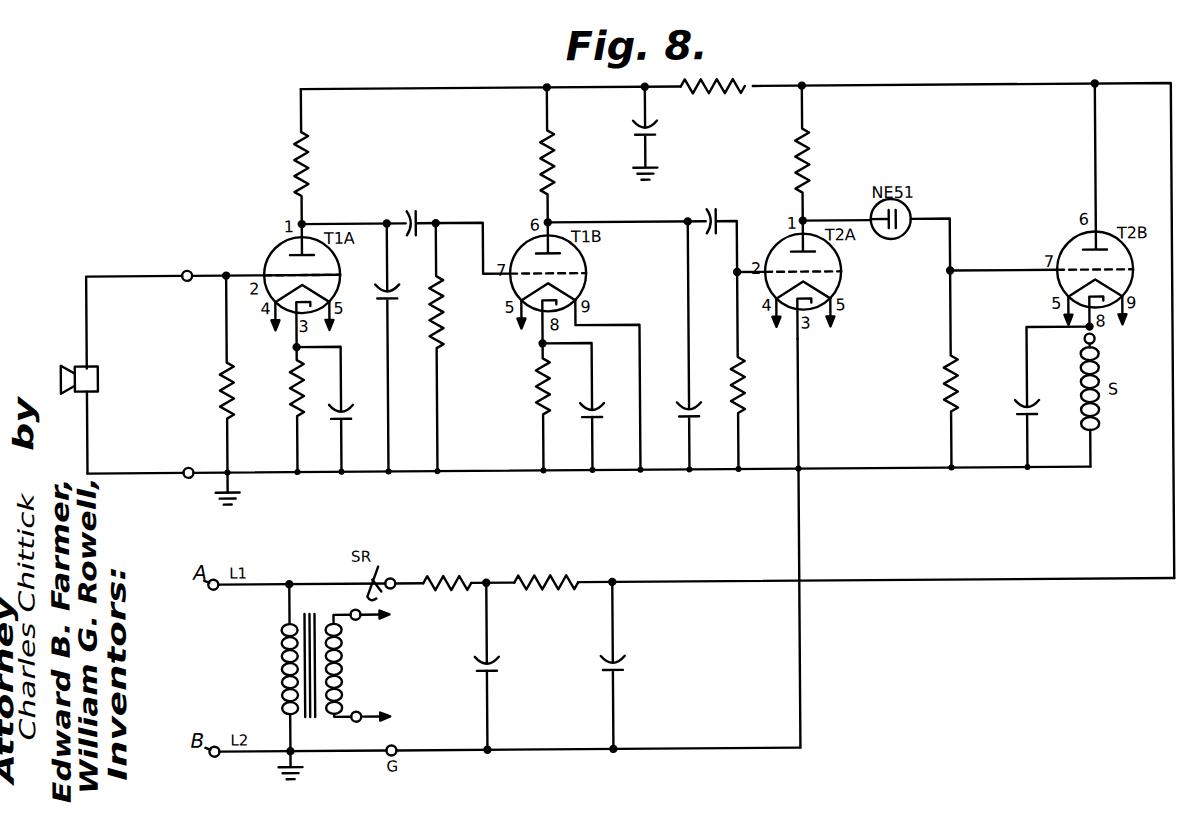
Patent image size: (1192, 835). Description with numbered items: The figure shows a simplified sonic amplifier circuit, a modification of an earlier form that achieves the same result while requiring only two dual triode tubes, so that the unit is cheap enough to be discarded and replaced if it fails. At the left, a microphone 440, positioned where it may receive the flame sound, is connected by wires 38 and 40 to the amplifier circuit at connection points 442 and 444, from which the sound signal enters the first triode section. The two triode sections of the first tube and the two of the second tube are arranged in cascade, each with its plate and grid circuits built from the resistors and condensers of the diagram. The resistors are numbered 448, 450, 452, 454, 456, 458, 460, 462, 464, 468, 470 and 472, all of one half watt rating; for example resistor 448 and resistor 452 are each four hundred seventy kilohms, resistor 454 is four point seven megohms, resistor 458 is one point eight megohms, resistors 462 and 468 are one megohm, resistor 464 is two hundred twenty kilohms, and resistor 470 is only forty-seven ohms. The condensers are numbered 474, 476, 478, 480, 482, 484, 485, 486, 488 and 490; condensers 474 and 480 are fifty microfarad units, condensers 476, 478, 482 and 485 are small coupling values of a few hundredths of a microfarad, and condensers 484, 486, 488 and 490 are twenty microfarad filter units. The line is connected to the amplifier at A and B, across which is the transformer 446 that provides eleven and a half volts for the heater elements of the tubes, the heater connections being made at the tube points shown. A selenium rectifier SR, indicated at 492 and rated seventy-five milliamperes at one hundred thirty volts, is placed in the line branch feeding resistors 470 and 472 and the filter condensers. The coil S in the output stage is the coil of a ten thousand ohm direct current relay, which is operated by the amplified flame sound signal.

The wire 38 is at (87, 312).
The wire 40 is at (155, 470).
The microphone 440 is at (92, 365).
The connection point 442 is at (194, 258).
The connection point 444 is at (187, 476).
The transformer 446 is at (312, 716).
The resistor 448 is at (313, 152).
The resistor 450 is at (712, 84).
The resistor 452 is at (557, 142).
The resistor 454 is at (218, 375).
The resistor 456 is at (290, 368).
The resistor 458 is at (430, 330).
The resistor 460 is at (536, 384).
The resistor 462 is at (746, 380).
The resistor 464 is at (815, 142).
The resistor 468 is at (943, 372).
The resistor 470 is at (452, 565).
The resistor 472 is at (552, 565).
The condenser 474 is at (335, 412).
The condenser 476 is at (383, 294).
The condenser 478 is at (413, 210).
The condenser 480 is at (618, 392).
The condenser 482 is at (700, 417).
The condenser 484 is at (660, 128).
The condenser 485 is at (713, 210).
The condenser 486 is at (1020, 410).
The condenser 488 is at (623, 664).
The condenser 490 is at (510, 658).
The selenium rectifier 492 is at (376, 590).